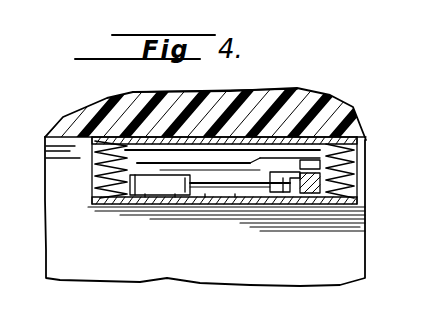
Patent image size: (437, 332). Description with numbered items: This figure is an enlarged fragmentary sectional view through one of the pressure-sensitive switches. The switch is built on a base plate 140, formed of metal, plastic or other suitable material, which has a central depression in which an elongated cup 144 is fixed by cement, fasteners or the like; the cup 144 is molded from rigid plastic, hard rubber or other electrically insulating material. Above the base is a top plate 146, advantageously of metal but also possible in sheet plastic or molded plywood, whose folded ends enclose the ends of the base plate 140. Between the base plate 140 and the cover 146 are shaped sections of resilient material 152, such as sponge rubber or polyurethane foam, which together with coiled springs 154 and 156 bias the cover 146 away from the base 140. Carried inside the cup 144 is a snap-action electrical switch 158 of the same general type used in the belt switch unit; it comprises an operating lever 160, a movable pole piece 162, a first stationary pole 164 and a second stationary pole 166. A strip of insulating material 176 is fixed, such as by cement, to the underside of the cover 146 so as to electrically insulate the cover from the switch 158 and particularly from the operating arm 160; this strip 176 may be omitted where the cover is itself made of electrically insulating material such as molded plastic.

The base plate 140 is at (95, 200).
The elongated cup 144 is at (310, 194).
The top plate 146 is at (333, 110).
The shaped sections of resilient material 152 is at (358, 138).
The coiled spring 154 is at (94, 171).
The coiled spring 156 is at (356, 177).
The snap-action electrical switch 158 is at (160, 185).
The operating lever 160 is at (235, 167).
The movable pole piece 162 is at (253, 186).
The first stationary pole 164 is at (366, 207).
The second stationary pole 166 is at (300, 180).
The strip of insulating material 176 is at (283, 148).